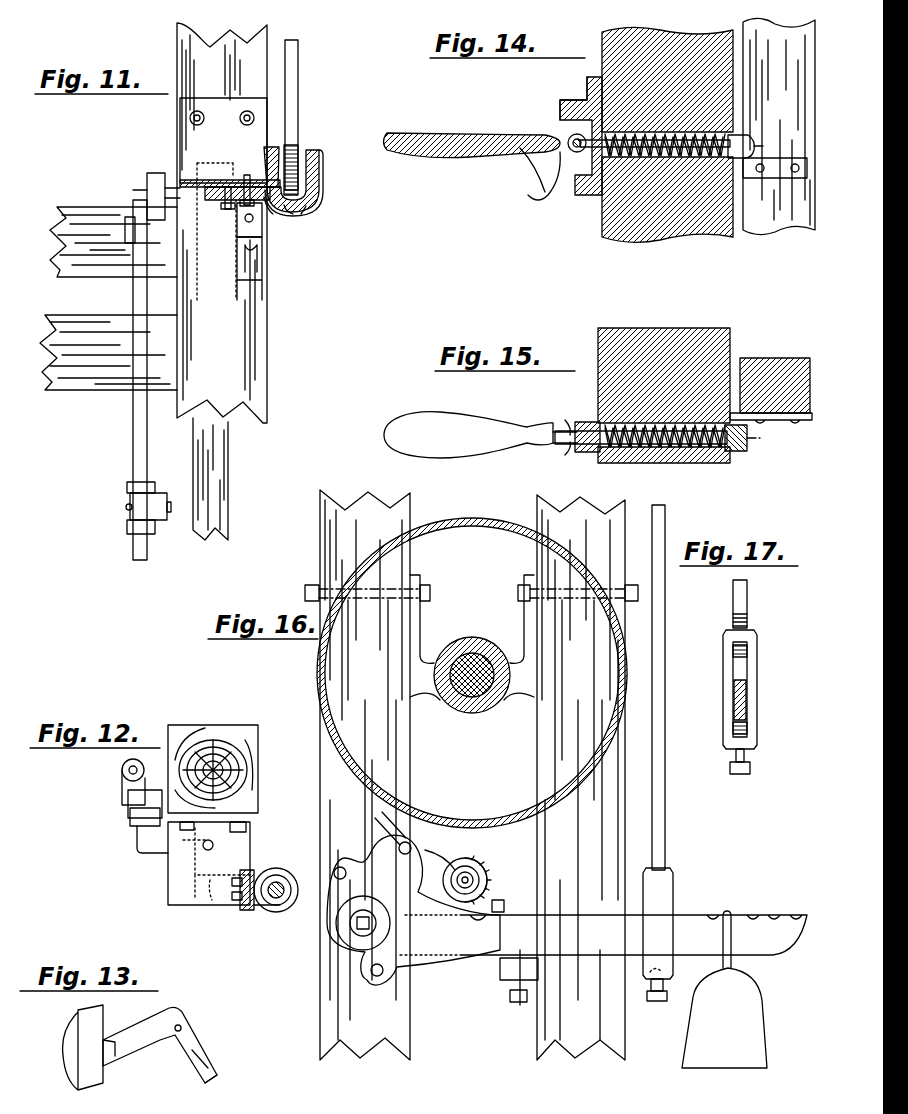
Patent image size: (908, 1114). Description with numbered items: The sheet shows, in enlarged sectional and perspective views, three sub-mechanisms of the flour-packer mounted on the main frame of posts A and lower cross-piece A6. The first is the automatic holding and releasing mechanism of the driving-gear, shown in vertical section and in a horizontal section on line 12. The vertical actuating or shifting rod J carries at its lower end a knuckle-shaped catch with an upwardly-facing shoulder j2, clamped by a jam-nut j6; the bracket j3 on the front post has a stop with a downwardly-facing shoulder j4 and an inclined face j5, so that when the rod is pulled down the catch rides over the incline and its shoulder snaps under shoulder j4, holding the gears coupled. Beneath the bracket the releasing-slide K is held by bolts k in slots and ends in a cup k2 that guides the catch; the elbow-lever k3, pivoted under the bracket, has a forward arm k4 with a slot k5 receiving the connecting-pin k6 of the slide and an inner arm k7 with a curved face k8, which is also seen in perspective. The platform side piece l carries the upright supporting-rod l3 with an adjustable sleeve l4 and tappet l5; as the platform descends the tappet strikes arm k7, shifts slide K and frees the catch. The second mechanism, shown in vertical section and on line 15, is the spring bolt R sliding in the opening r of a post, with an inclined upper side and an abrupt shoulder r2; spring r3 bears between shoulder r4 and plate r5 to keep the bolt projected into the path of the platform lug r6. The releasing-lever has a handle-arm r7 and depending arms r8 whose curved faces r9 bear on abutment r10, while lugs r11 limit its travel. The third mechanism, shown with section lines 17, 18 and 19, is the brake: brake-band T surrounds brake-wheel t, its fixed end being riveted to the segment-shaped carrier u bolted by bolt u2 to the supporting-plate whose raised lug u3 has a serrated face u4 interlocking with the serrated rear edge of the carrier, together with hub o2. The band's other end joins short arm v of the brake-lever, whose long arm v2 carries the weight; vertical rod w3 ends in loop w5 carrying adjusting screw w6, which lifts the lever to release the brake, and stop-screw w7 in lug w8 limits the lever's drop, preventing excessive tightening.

In FIG. 11, the post A is at (262, 413).
In FIG. 14, the post A is at (620, 248).
In FIG. 15, the post A is at (650, 313).
In FIG. 16, the post A is at (570, 532).
In FIG. 12, the post A is at (228, 725).
In FIG. 11, the lower cross-piece A6 is at (60, 237).
In FIG. 11, the actuating or shifting rod J is at (299, 52).
In FIG. 12, the actuating or shifting rod J is at (285, 870).
In FIG. 11, the upwardly-facing shoulder j2 is at (284, 205).
In FIG. 12, the upwardly-facing shoulder j2 is at (262, 905).
In FIG. 11, the bracket j3 is at (223, 140).
In FIG. 12, the bracket j3 is at (196, 847).
In FIG. 11, the downwardly-facing shoulder j4 is at (264, 197).
In FIG. 11, the inclined face j5 is at (271, 147).
In FIG. 12, the inclined face j5 is at (256, 873).
In FIG. 11, the jam-nut j6 is at (294, 145).
In FIG. 12, the jam-nut j6 is at (290, 880).
In FIG. 11, the releasing-slide K is at (195, 180).
In FIG. 12, the releasing-slide K is at (200, 900).
In FIG. 11, the bolt k is at (247, 175).
In FIG. 12, the bolt k is at (225, 889).
In FIG. 11, the cup or socket k2 is at (301, 214).
In FIG. 12, the cup or socket k2 is at (292, 912).
In FIG. 11, the elbow-lever k3 is at (228, 192).
In FIG. 13, the elbow-lever k3 is at (178, 1012).
In FIG. 13, the forwardly-projecting arm k4 is at (205, 1045).
In FIG. 13, the slot k5 is at (212, 1062).
In FIG. 11, the connecting-pin k6 is at (232, 198).
In FIG. 11, the inwardly-projecting arm k7 is at (241, 240).
In FIG. 12, the inwardly-projecting arm k7 is at (152, 853).
In FIG. 13, the inwardly-projecting arm k7 is at (160, 1045).
In FIG. 12, the curved face k8 is at (135, 822).
In FIG. 13, the curved face k8 is at (68, 1040).
In FIG. 11, the side piece l is at (210, 479).
In FIG. 14, the side piece l is at (779, 126).
In FIG. 15, the side piece l is at (771, 390).
In FIG. 12, the side piece l is at (150, 790).
In FIG. 11, the supporting-rod l3 is at (140, 428).
In FIG. 12, the supporting-rod l3 is at (120, 780).
In FIG. 11, the sleeve l4 is at (128, 530).
In FIG. 12, the sleeve l4 is at (122, 764).
In FIG. 11, the roller or tappet l5 is at (160, 483).
In FIG. 12, the roller or tappet l5 is at (142, 777).
In FIG. 11, the section line 12 is at (345, 93).
In FIG. 14, the section line 12 is at (545, 69).
In FIG. 14, the section line 15 is at (775, 118).
In FIG. 16, the section line 17 is at (674, 1040).
In FIG. 16, the section line 18 is at (520, 1050).
In FIG. 16, the section line 19 is at (535, 877).
In FIG. 14, the spring bolt or catch R is at (660, 160).
In FIG. 15, the spring bolt or catch R is at (668, 450).
In FIG. 14, the horizontal opening r is at (565, 128).
In FIG. 15, the horizontal opening r is at (632, 450).
In FIG. 14, the abrupt lower side or shoulder r2 is at (754, 152).
In FIG. 14, the spring r3 is at (648, 158).
In FIG. 15, the spring r3 is at (695, 452).
In FIG. 14, the shoulder r4 is at (722, 150).
In FIG. 15, the shoulder r4 is at (722, 458).
In FIG. 14, the plate r5 is at (587, 77).
In FIG. 15, the plate r5 is at (592, 422).
In FIG. 14, the lug or stop r6 is at (760, 178).
In FIG. 15, the lug or stop r6 is at (745, 452).
In FIG. 14, the thumb-piece or handle-arm r7 is at (424, 109).
In FIG. 15, the thumb-piece or handle-arm r7 is at (468, 435).
In FIG. 14, the downwardly-projecting arm r8 is at (548, 176).
In FIG. 14, the curved face r9 is at (570, 160).
In FIG. 14, the abutment r10 is at (580, 190).
In FIG. 14, the upwardly-projecting lug r11 is at (580, 110).
In FIG. 15, the upwardly-projecting lug r11 is at (566, 450).
In FIG. 16, the brake-wheel t is at (440, 822).
In FIG. 16, the brake-band T is at (370, 800).
In FIG. 16, the hub o2 is at (500, 640).
In FIG. 16, the segment-shaped carrier u is at (450, 880).
In FIG. 16, the horizontal bolt u2 is at (445, 873).
In FIG. 16, the raised lug u3 is at (504, 898).
In FIG. 16, the ratchet u4 is at (485, 858).
In FIG. 16, the short arm v is at (413, 910).
In FIG. 16, the long arm v2 is at (757, 936).
In FIG. 17, the long arm v2 is at (746, 698).
In FIG. 16, the vertical rod w3 is at (665, 720).
In FIG. 17, the vertical rod w3 is at (747, 595).
In FIG. 16, the loop w5 is at (658, 923).
In FIG. 17, the loop w5 is at (757, 650).
In FIG. 16, the bearing or adjusting screw w6 is at (647, 998).
In FIG. 17, the bearing or adjusting screw w6 is at (748, 755).
In FIG. 16, the stop-screw w7 is at (510, 998).
In FIG. 16, the laterally-projecting lug w8 is at (500, 972).